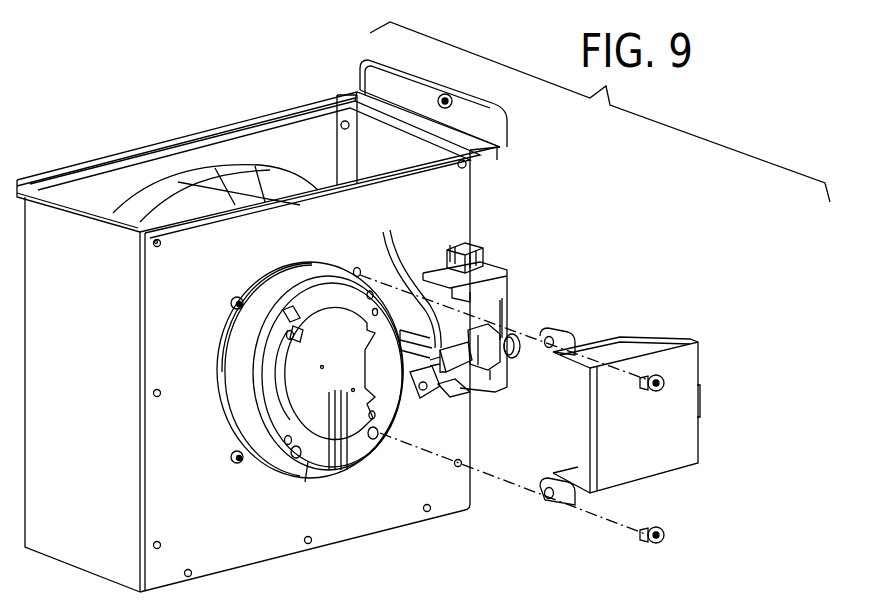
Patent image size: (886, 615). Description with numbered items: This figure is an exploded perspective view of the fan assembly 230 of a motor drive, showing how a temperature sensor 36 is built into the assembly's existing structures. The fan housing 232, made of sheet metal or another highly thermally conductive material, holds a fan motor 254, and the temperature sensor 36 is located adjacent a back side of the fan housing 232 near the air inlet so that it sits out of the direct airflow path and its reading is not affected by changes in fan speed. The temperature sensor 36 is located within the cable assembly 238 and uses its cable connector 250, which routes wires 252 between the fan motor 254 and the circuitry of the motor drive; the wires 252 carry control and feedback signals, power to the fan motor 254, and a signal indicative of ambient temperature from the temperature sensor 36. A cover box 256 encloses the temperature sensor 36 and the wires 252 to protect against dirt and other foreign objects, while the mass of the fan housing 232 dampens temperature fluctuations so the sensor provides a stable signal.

The fan assembly 230 is at (106, 97).
The fan housing 232 is at (365, 515).
The fan motor 254 is at (313, 453).
The wires 252 is at (404, 279).
The temperature sensor 36 is at (422, 390).
The cable connector 250 is at (483, 263).
The cable assembly 238 is at (553, 298).
The cover box 256 is at (650, 480).